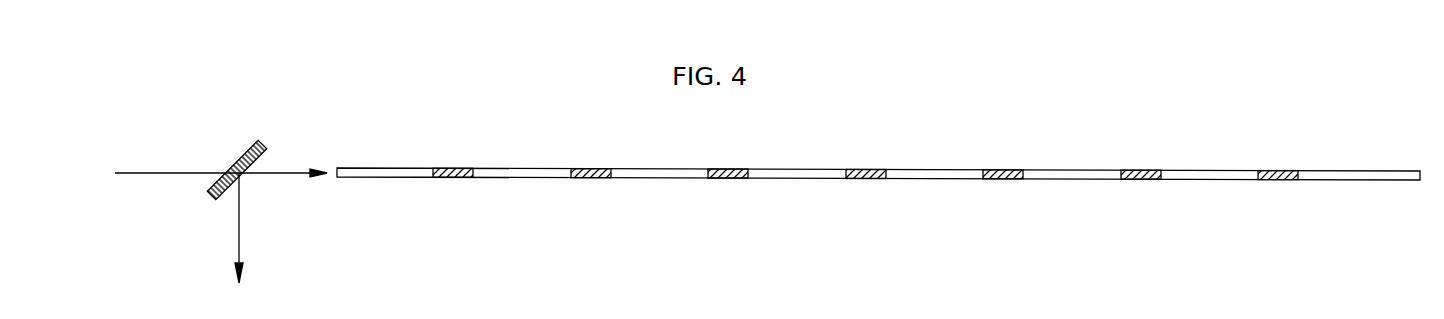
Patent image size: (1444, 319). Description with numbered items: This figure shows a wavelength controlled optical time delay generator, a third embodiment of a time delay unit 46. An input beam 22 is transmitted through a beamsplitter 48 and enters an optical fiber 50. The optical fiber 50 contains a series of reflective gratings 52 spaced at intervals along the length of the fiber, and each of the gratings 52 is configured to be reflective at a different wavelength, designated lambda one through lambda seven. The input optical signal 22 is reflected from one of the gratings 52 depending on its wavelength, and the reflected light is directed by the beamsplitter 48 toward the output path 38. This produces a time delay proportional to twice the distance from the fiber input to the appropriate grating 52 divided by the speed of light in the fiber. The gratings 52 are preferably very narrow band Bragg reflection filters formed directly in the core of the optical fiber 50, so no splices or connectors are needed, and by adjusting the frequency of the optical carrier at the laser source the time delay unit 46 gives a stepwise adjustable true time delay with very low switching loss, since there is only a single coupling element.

The input beam 22 is at (220, 172).
The beamsplitter 48 is at (265, 152).
The output light beam 38 is at (240, 223).
The time delay unit 46 is at (887, 152).
The optical fiber 50 is at (1390, 170).
The reflective gratings 52 is at (455, 178).